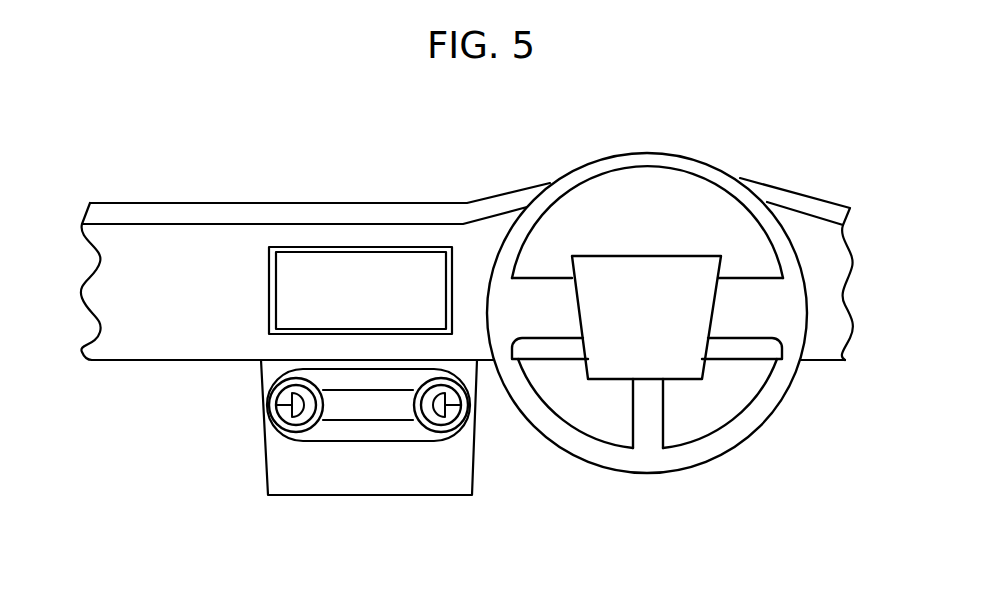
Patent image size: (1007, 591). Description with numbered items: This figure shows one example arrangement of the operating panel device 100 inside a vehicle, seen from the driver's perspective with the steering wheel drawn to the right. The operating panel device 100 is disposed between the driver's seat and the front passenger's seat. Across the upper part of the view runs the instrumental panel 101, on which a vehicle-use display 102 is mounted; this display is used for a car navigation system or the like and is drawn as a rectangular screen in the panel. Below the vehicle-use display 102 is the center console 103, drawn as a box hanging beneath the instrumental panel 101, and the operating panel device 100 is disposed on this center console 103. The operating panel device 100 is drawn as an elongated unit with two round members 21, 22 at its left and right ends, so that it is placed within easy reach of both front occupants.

The instrumental panel 101 is at (203, 242).
The vehicle-use display 102 is at (347, 287).
The center console 103 is at (308, 475).
The operating panel device 100 is at (360, 467).
The first dial (operation knob) 21 is at (277, 432).
The second dial (operation knob) 22 is at (457, 428).